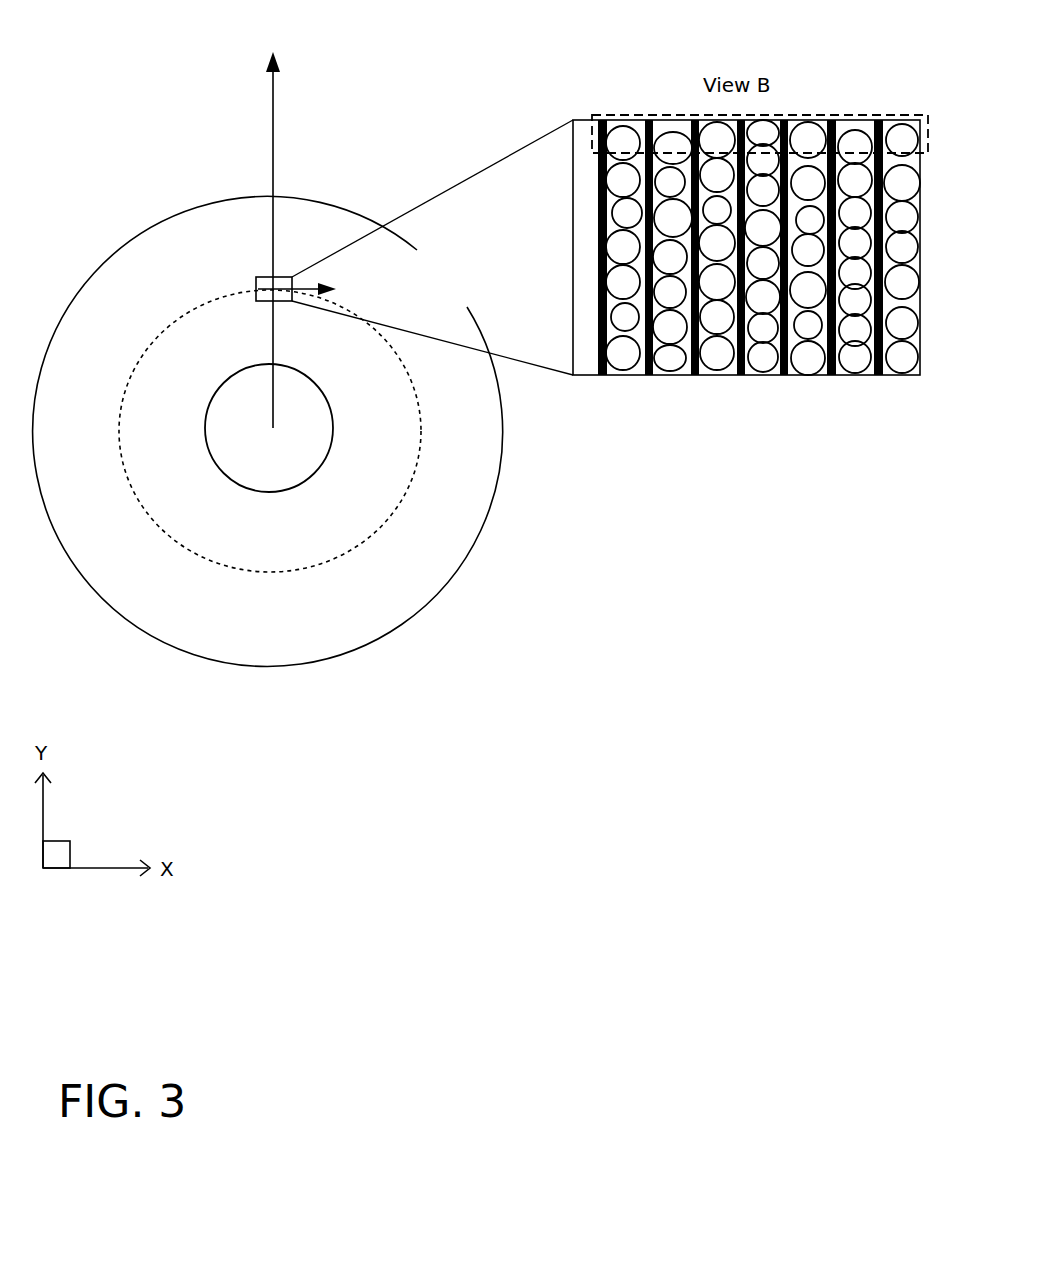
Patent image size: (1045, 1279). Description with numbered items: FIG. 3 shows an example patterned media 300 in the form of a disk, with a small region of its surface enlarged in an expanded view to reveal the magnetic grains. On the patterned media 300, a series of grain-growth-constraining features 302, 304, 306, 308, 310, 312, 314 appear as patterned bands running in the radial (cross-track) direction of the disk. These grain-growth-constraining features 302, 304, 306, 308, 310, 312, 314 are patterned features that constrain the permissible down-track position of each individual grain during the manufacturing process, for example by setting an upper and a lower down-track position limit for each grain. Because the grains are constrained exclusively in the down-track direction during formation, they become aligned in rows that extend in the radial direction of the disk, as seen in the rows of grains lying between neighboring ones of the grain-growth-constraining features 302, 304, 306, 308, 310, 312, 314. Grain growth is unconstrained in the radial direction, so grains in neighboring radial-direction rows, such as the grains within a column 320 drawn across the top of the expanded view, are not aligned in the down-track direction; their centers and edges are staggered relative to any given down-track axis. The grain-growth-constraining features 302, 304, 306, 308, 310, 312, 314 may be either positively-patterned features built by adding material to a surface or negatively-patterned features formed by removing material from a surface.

The patterned media 300 is at (158, 94).
The grain-growth-constraining feature 302 is at (603, 375).
The grain-growth-constraining feature 304 is at (649, 375).
The grain-growth-constraining feature 306 is at (695, 375).
The grain-growth-constraining feature 308 is at (741, 375).
The grain-growth-constraining feature 310 is at (784, 375).
The grain-growth-constraining feature 312 is at (831, 375).
The grain-growth-constraining feature 314 is at (878, 375).
The column 320 is at (830, 115).